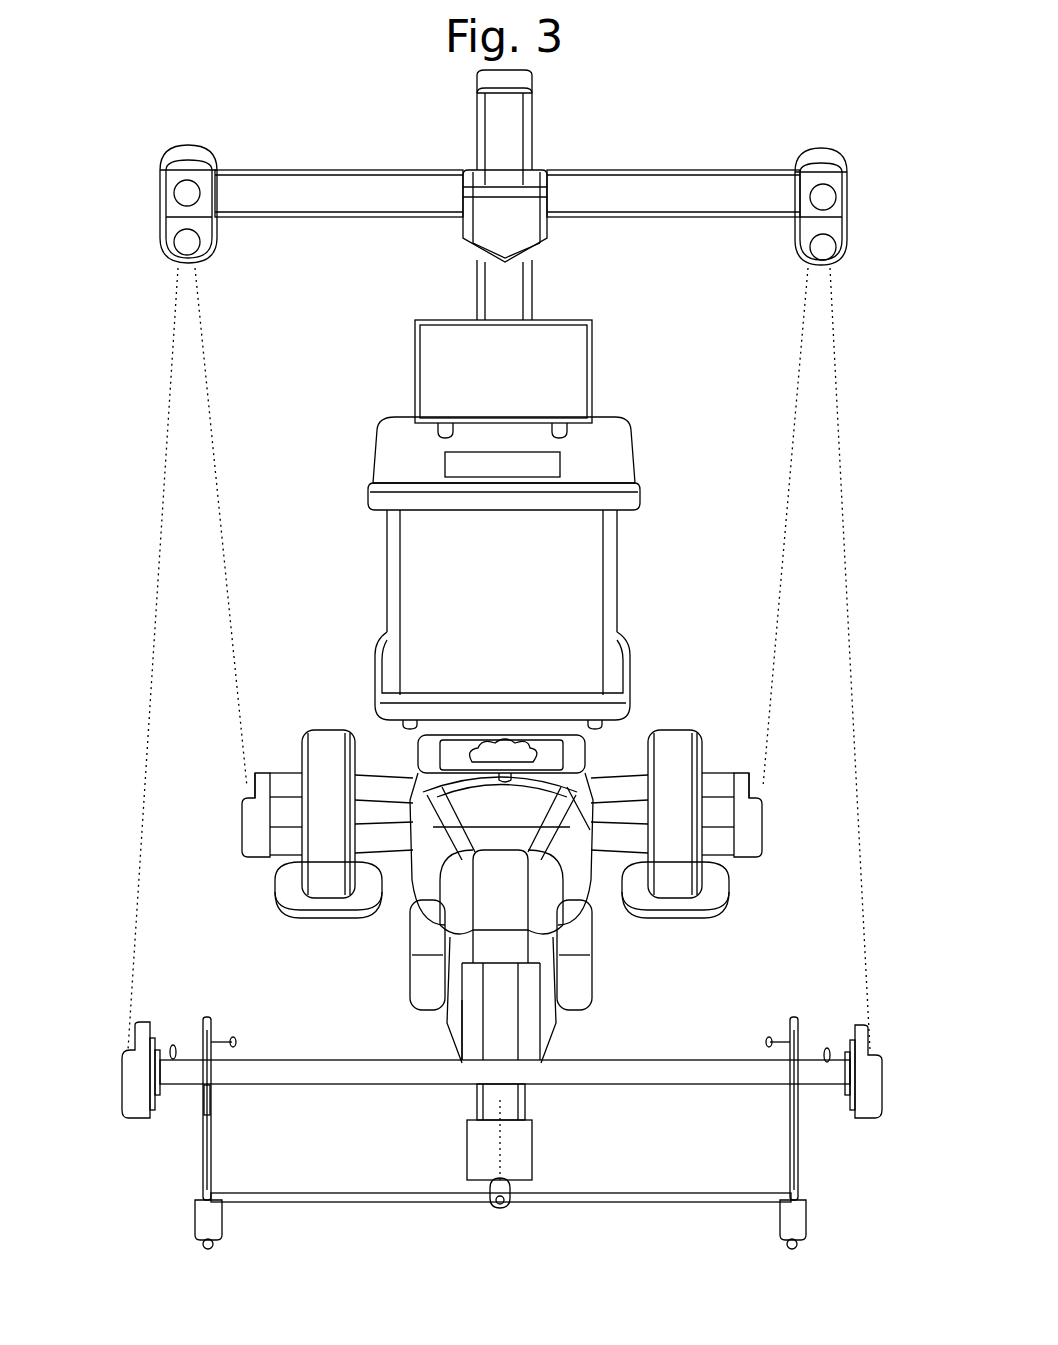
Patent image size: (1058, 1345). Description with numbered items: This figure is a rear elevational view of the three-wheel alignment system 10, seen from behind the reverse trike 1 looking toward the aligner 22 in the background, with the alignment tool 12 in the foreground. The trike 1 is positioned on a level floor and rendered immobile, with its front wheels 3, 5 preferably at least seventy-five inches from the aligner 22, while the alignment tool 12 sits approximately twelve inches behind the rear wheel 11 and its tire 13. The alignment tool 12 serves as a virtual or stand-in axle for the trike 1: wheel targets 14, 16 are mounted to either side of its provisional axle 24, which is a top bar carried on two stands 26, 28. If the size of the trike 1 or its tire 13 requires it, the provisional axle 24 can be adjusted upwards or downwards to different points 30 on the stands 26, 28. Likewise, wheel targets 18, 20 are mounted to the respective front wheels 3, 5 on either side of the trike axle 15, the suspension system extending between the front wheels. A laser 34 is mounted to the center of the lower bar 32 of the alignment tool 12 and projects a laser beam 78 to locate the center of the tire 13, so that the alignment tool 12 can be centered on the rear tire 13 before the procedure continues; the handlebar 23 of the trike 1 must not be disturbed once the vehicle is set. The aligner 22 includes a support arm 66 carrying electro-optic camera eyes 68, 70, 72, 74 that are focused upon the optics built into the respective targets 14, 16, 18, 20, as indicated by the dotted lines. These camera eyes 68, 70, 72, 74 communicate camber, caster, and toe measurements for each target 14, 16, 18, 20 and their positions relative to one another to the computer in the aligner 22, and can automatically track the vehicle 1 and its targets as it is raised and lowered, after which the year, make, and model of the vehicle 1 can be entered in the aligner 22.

The three-wheel alignment system 10 is at (872, 98).
The reverse trike 1 is at (510, 903).
The front wheel 3 is at (298, 840).
The front wheel 5 is at (700, 838).
The rear wheel 11 is at (462, 1026).
The alignment tool 12 is at (507, 1117).
The tire 13 is at (478, 1103).
The wheel target 14 is at (133, 1088).
The suspension system or axle 15 is at (383, 818).
The wheel target 16 is at (865, 1090).
The wheel target 18 is at (255, 828).
The wheel target 20 is at (747, 826).
The aligner 22 is at (518, 383).
The handlebar 23 is at (570, 793).
The provisional axle 24 is at (697, 1073).
The stand 26 is at (787, 1210).
The stand 28 is at (212, 1205).
The points 30 is at (213, 1088).
The bar 32 is at (665, 1197).
The laser 34 is at (500, 1185).
The arm 66 is at (432, 205).
The camera eye 68 is at (190, 195).
The camera eye 70 is at (195, 248).
The camera eye 72 is at (815, 190).
The camera eye 74 is at (802, 252).
The laser beam 78 is at (523, 1127).